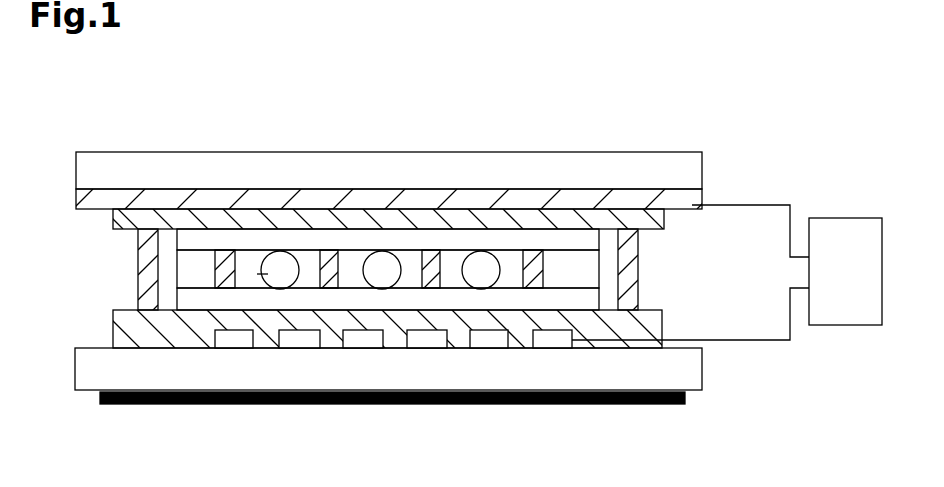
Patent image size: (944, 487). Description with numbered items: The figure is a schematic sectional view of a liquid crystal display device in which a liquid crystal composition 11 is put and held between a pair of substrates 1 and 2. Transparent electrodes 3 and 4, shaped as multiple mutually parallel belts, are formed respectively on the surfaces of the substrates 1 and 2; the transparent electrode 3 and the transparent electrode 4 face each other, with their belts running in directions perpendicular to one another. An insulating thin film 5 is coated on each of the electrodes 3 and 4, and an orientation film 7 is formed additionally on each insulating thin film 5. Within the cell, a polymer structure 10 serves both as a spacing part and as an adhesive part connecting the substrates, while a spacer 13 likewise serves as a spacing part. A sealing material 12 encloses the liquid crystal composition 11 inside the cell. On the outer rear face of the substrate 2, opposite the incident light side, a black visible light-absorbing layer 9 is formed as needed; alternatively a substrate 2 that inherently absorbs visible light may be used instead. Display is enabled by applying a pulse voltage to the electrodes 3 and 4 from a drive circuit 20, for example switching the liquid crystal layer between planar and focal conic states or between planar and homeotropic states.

The substrate 1 is at (697, 177).
The substrate 2 is at (703, 371).
The transparent electrode 3 is at (84, 204).
The transparent electrode 4 is at (227, 342).
The insulating thin film 5 is at (662, 219).
The orientation film 7 is at (599, 247).
The visible light-absorbing layer 9 is at (138, 405).
The polymer structure 10 is at (215, 274).
The liquid crystal composition 11 is at (411, 259).
The sealing material 12 is at (138, 298).
The spacer 13 is at (215, 264).
The drive circuit 20 is at (838, 313).